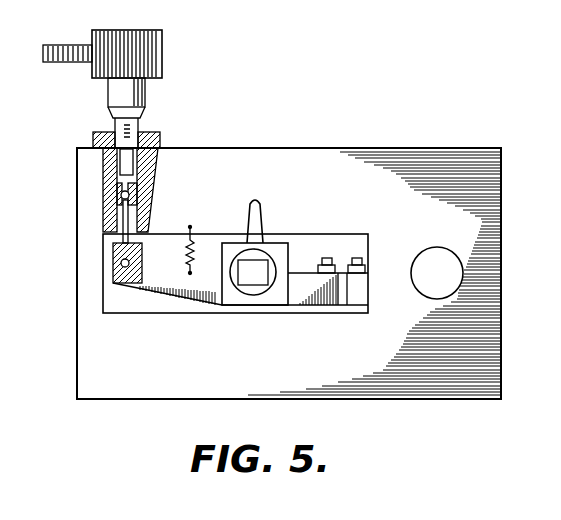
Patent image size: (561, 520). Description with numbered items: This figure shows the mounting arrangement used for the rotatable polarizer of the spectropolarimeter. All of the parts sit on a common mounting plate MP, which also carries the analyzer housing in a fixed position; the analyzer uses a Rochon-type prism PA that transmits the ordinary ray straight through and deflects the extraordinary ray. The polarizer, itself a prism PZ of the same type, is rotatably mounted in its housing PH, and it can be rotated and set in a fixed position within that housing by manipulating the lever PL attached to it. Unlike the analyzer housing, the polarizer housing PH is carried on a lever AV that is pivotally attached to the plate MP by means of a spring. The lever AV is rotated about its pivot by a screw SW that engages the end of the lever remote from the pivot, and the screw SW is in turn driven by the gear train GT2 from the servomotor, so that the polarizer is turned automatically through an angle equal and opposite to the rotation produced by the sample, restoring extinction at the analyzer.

The gear train GT2 is at (82, 43).
The screw SW is at (140, 140).
The mounting plate MP is at (282, 148).
The Rochon prism PZ is at (450, 270).
The lever AV is at (213, 293).
The polarizer housing PH is at (278, 250).
The Rochon prism PA is at (247, 266).
The lever PL is at (257, 204).